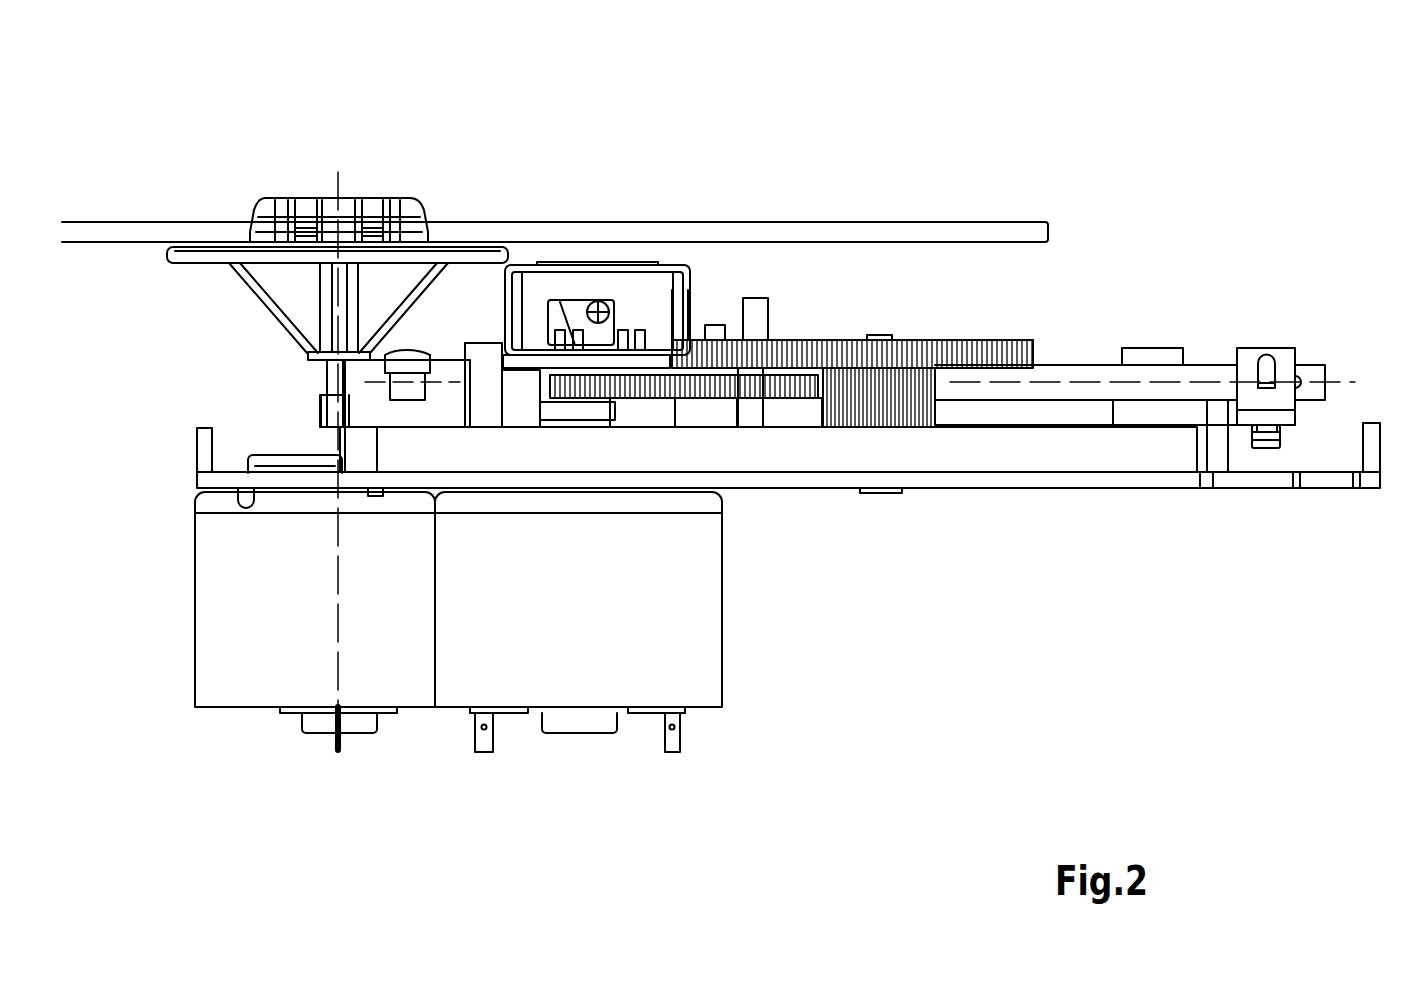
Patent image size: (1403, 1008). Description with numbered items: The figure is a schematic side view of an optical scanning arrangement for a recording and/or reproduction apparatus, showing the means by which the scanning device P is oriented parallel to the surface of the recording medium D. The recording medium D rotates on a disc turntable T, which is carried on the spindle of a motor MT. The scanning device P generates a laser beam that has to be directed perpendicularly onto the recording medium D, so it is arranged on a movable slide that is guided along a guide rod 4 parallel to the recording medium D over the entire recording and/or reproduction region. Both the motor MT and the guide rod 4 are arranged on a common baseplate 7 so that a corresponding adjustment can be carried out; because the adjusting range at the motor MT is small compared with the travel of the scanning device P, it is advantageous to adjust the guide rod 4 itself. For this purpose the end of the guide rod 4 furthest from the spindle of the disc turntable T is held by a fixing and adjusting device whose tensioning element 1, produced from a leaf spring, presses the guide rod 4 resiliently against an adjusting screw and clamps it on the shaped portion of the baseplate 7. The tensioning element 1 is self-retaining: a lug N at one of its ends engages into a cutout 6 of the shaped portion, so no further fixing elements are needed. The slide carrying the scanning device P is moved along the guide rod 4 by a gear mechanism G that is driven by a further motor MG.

The disc turntable T is at (212, 247).
The scanning device P is at (600, 262).
The recording medium D is at (928, 232).
The guide rod 4 is at (1058, 380).
The tensioning element 1 is at (1268, 362).
The lug N is at (1288, 432).
The cutout 6 is at (1265, 445).
The gear mechanism G is at (895, 428).
The baseplate 7 is at (766, 478).
The motor MT is at (248, 677).
The motor MG is at (467, 677).